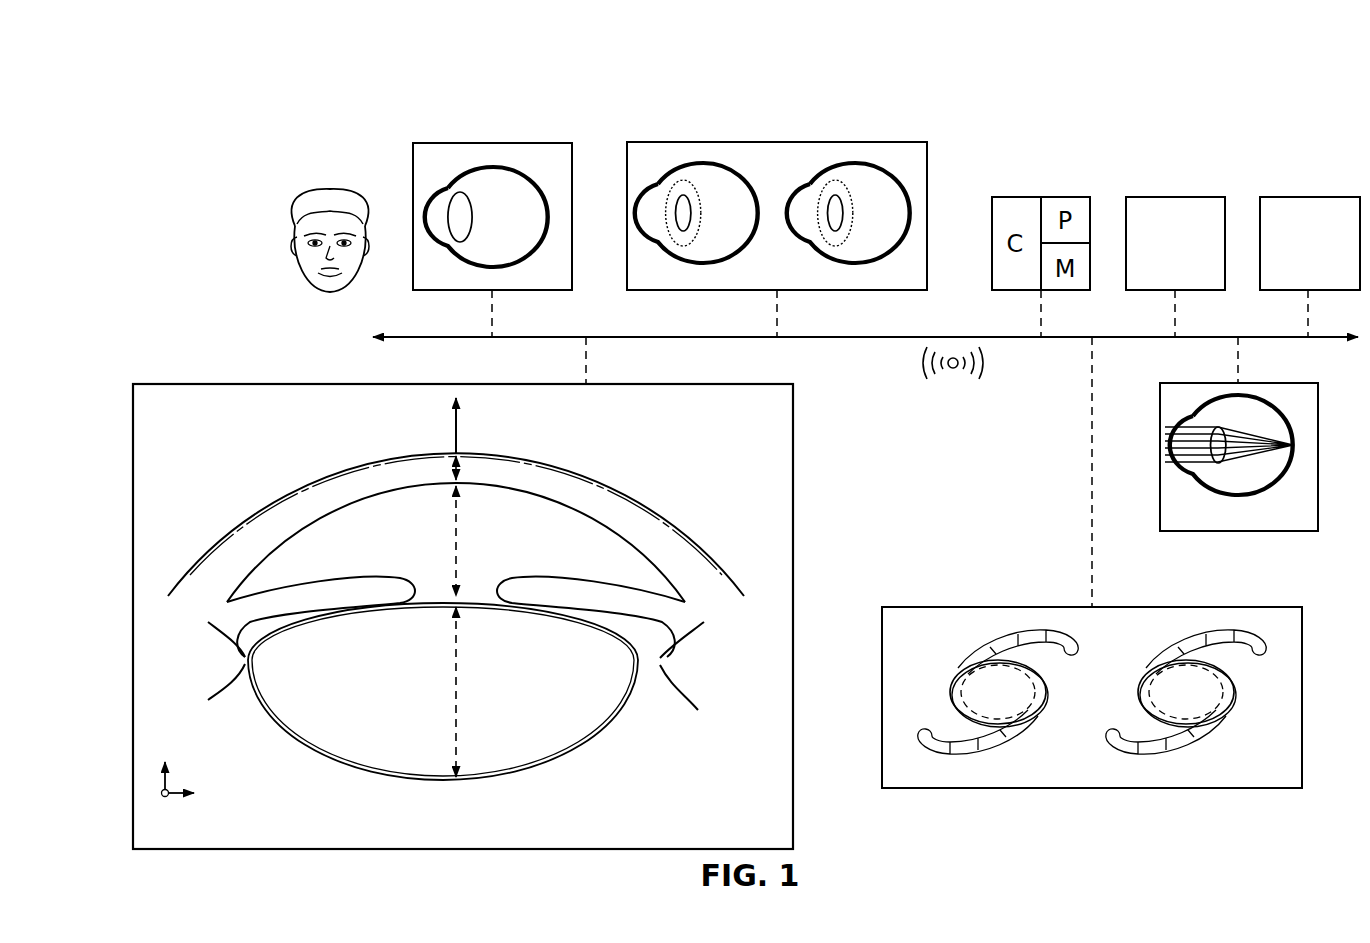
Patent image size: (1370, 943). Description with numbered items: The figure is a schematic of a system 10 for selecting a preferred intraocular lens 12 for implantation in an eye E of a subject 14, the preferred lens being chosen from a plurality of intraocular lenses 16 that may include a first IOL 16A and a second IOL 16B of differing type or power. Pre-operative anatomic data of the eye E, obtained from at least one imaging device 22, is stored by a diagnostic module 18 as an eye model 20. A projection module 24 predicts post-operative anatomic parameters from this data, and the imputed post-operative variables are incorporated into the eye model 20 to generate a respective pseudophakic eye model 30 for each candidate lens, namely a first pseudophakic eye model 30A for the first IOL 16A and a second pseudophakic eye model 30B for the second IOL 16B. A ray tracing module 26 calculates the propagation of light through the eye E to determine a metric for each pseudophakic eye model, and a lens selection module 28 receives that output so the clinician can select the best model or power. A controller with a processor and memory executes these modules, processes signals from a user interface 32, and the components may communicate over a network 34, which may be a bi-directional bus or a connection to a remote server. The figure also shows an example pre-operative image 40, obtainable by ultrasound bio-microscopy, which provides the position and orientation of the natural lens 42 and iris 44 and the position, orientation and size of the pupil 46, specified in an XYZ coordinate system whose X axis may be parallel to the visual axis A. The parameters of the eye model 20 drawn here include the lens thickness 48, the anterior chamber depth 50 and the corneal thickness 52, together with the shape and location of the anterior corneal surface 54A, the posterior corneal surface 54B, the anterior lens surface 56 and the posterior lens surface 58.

The system 10 is at (190, 86).
The preferred intraocular lens 12 is at (1059, 772).
The subject 14 is at (338, 168).
The plurality of intraocular lenses 16 is at (1283, 597).
The first IOL 16A is at (965, 641).
The second IOL 16B is at (1168, 641).
The diagnostic module 18 is at (543, 143).
The eye model 20 is at (466, 175).
The imaging device 22 is at (765, 384).
The projection module 24 is at (874, 143).
The ray tracing module 26 is at (1285, 383).
The lens selection module 28 is at (1195, 197).
The pseudophakic eye model 30 is at (738, 157).
The first pseudophakic eye model 30A is at (680, 170).
The second pseudophakic eye model 30B is at (832, 170).
The user interface 32 is at (1325, 197).
The network 34 is at (998, 364).
The pre-operative image 40 is at (200, 429).
The natural lens 42 is at (583, 768).
The iris 44 is at (350, 578).
The pupil 46 is at (438, 596).
The lens thickness 48 is at (458, 687).
The anterior chamber depth 50 is at (458, 538).
The corneal thickness 52 is at (462, 471).
The anterior corneal surface 54A is at (594, 481).
The posterior corneal surface 54B is at (533, 492).
The anterior lens surface 56 is at (484, 604).
The posterior lens surface 58 is at (608, 722).
The visual axis A is at (455, 423).
The eye E is at (322, 244).